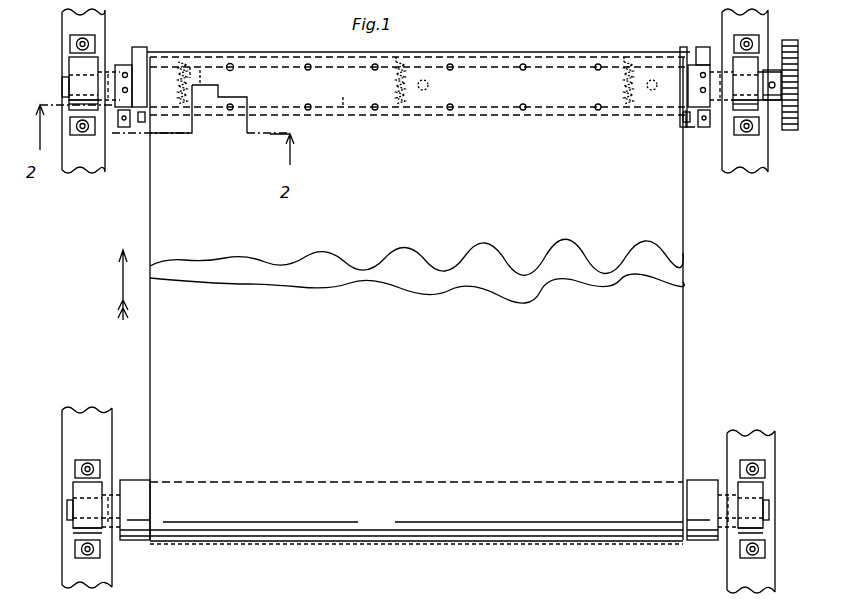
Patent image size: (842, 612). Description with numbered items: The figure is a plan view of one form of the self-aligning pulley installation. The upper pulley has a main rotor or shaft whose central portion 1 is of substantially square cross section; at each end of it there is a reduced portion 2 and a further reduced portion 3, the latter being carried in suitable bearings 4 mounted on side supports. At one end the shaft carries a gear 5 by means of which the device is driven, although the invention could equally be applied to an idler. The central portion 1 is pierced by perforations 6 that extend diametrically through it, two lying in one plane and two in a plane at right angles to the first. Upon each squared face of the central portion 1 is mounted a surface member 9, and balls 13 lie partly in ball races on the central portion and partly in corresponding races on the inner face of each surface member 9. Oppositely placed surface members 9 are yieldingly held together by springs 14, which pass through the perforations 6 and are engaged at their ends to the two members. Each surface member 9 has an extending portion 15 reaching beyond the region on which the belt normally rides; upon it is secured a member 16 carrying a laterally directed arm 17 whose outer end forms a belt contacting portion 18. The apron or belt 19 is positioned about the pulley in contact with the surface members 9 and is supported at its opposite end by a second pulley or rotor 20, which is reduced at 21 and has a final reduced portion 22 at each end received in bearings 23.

The central portion 1 is at (343, 99).
The reduced portion 2 is at (106, 102).
The further reduced portion 3 is at (62, 87).
The bearings 4 is at (69, 70).
The gear 5 is at (790, 42).
The perforations 6 is at (190, 66).
The surface member 9 is at (258, 58).
The balls 13 is at (230, 63).
The springs 14 is at (178, 108).
The extending portion 15 is at (135, 78).
The member 16 is at (122, 62).
The laterally directed arm 17 is at (694, 122).
The belt contacting portion 18 is at (141, 48).
The apron or belt 19 is at (667, 293).
The pulley or rotor 20 is at (700, 538).
The reduced portion 21 is at (110, 497).
The final reduced portion 22 is at (70, 512).
The bearings 23 is at (80, 487).